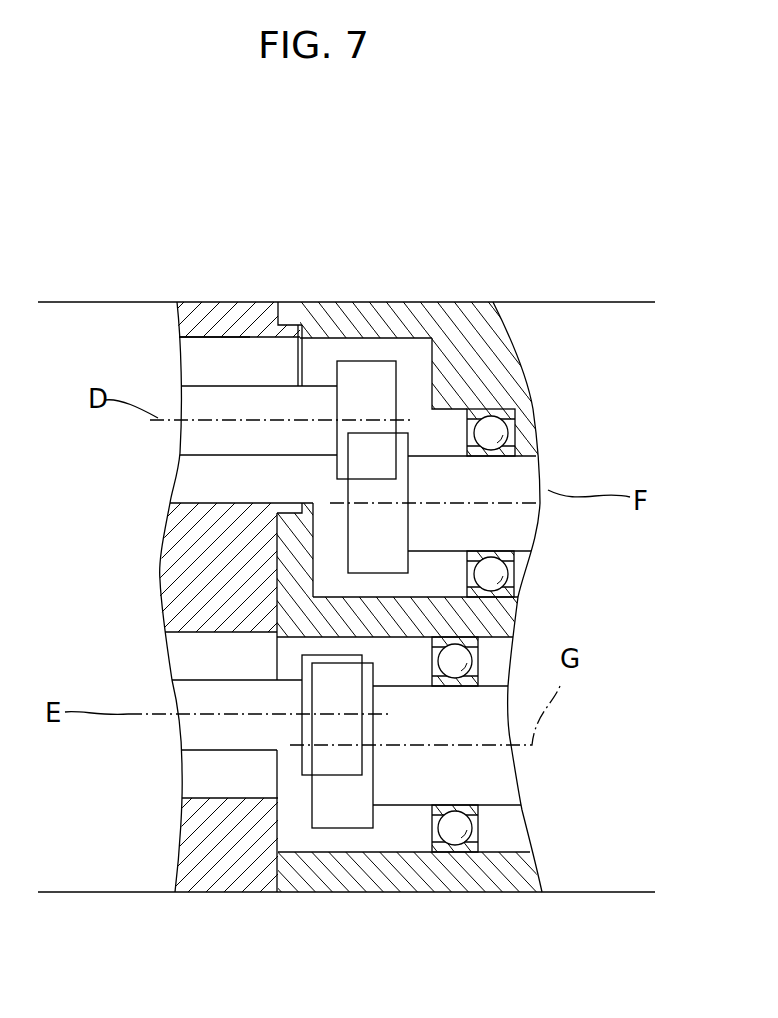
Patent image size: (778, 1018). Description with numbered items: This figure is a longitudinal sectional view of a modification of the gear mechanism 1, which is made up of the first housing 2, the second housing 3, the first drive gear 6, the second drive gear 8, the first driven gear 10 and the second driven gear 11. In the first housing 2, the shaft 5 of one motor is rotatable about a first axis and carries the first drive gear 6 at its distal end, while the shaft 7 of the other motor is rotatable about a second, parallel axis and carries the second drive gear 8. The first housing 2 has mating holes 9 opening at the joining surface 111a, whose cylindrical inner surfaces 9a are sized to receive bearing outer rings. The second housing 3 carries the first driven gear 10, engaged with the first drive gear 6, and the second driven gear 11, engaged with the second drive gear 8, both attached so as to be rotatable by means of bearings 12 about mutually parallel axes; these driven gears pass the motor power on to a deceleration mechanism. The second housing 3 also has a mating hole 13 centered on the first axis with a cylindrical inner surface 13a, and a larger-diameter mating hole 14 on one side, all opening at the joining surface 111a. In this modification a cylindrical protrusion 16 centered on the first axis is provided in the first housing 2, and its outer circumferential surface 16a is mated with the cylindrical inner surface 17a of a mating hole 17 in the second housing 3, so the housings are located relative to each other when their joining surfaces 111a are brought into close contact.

The gear mechanism 1 is at (553, 239).
The first housing 2 is at (63, 302).
The second housing 3 is at (436, 302).
The shaft 5 is at (315, 383).
The first drive gear 6 is at (358, 361).
The shaft 7 is at (192, 672).
The second drive gear 8 is at (338, 778).
The mating hole 9 is at (190, 503).
The inner surface 9a is at (183, 356).
The first driven gear 10 is at (408, 527).
The second driven gear 11 is at (347, 830).
The bearing 12 is at (530, 433).
The mating hole 13 is at (378, 338).
The inner surface 13a is at (440, 360).
The mating hole 14 is at (414, 838).
The cylindrical protrusion 16 is at (301, 337).
The outer circumferential surface 16a is at (292, 333).
The mating hole 17 is at (290, 338).
The cylindrical inner surface 17a is at (275, 337).
The joining surface 111a is at (276, 862).